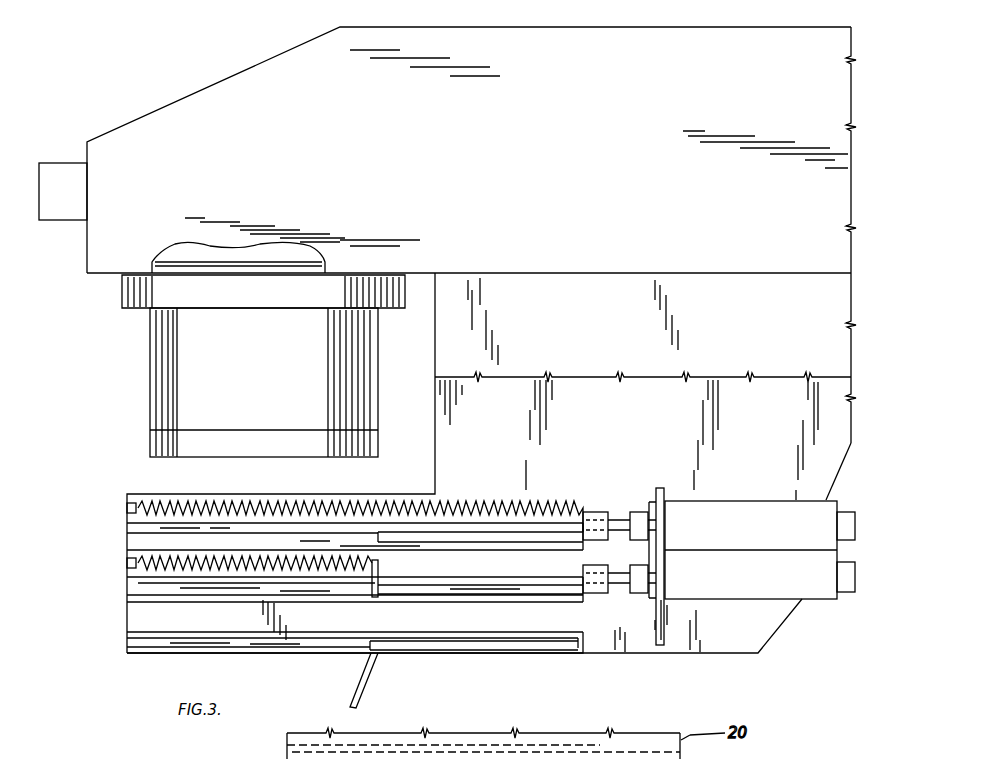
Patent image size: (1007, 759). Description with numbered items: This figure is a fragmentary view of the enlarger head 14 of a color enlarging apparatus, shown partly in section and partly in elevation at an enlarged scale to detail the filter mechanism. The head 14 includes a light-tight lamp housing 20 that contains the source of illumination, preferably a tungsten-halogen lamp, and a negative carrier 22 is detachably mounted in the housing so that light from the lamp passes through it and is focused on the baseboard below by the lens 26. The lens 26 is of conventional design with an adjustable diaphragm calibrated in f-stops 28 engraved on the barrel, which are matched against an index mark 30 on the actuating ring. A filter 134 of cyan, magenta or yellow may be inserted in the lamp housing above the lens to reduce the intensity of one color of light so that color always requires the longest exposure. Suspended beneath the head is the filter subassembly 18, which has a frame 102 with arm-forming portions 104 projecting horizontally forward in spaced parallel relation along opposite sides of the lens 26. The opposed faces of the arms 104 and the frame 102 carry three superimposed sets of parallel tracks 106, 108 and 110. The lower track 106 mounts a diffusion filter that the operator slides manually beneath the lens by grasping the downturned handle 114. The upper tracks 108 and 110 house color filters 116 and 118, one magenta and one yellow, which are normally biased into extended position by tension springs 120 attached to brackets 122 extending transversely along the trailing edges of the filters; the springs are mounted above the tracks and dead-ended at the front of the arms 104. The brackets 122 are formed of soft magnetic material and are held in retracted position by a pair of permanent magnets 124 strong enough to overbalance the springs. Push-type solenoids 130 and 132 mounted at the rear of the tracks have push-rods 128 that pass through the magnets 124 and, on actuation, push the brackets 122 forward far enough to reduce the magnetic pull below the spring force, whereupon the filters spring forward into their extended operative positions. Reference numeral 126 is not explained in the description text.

The enlarger head 14 is at (200, 61).
The filter subassembly 18 is at (112, 668).
The lamp housing 20 is at (684, 239).
The negative carrier 22 is at (54, 172).
The lens 26 is at (160, 365).
The f-stops 28 is at (222, 408).
The index mark 30 is at (208, 442).
The frame 102 is at (430, 468).
The arm-forming portions 104 is at (258, 625).
The lower track 106 is at (153, 647).
The track 108 is at (495, 590).
The track 110 is at (135, 538).
The downturned handle 114 is at (368, 677).
The color filter 116 is at (150, 600).
The color filter 118 is at (468, 542).
The tension springs 120 is at (165, 500).
The brackets 122 is at (592, 512).
The permanent magnets 124 is at (600, 545).
The link 126 is at (603, 592).
The push-rods 128 is at (645, 512).
The push-type solenoid 130 is at (800, 600).
The push-type solenoid 132 is at (732, 510).
The filter 134 is at (250, 248).